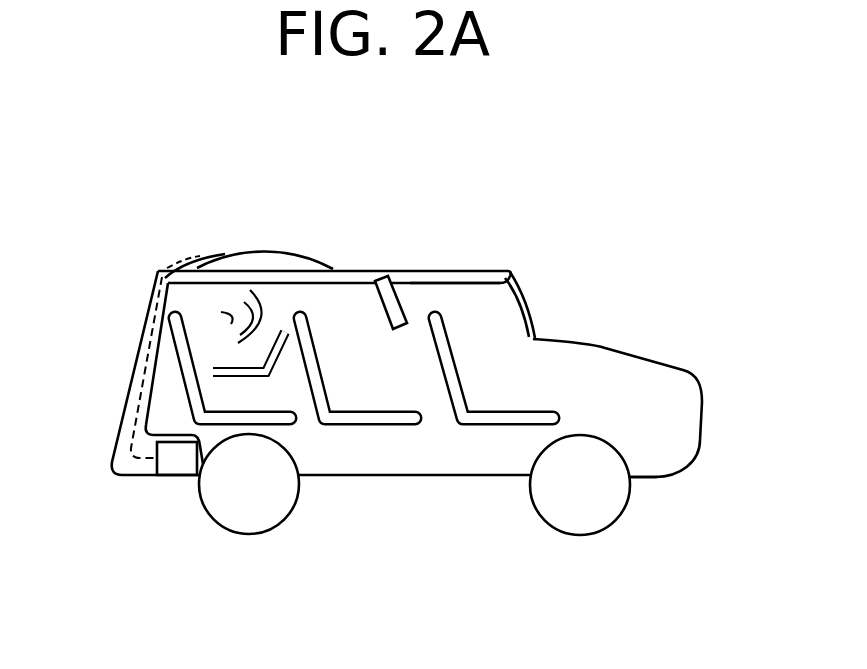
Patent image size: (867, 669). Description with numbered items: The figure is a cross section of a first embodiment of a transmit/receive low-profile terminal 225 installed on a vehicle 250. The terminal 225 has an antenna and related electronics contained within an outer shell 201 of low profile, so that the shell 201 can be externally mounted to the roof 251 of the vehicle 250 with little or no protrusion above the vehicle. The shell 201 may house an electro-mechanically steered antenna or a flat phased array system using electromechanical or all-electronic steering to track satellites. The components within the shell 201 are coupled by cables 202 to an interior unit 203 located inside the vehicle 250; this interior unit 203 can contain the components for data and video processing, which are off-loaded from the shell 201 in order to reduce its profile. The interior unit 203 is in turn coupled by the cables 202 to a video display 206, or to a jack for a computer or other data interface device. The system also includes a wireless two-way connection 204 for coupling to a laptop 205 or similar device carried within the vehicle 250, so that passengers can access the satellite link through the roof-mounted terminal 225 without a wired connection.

The vehicle 250 is at (605, 358).
The outer shell 201 is at (276, 253).
The terminal 225 is at (222, 266).
The cables 202 is at (161, 267).
The interior unit 203 is at (163, 460).
The wireless two-way connection 204 is at (227, 334).
The laptop 205 is at (230, 348).
The roof 251 is at (378, 268).
The video display 206 is at (403, 290).